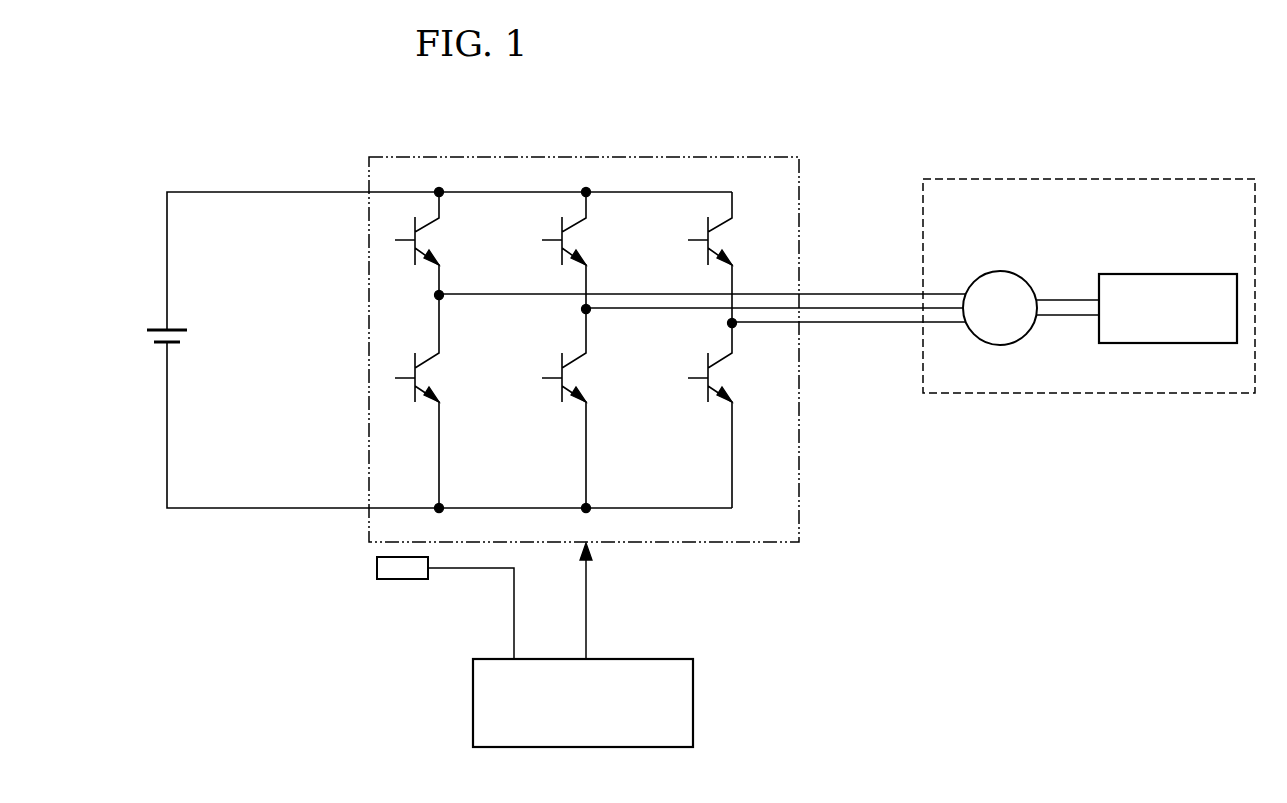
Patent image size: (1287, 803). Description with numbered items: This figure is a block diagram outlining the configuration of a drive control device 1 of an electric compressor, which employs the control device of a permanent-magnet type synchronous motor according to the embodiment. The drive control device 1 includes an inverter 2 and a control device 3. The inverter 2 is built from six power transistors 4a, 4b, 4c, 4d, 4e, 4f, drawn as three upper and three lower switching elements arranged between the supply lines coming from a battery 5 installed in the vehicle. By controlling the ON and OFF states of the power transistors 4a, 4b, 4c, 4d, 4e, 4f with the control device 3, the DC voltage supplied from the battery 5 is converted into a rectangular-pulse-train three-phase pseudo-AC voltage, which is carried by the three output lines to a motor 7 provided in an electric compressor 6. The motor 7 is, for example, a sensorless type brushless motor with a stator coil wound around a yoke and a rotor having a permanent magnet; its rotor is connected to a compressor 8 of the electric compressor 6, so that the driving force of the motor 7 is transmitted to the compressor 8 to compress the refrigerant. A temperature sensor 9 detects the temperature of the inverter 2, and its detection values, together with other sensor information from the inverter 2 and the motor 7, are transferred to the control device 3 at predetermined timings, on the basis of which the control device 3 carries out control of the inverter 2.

The drive control device 1 is at (826, 108).
The inverter 2 is at (680, 157).
The control device 3 is at (697, 700).
The power transistor 4a is at (430, 240).
The power transistor 4b is at (577, 240).
The power transistor 4c is at (723, 240).
The power transistor 4d is at (432, 378).
The power transistor 4e is at (578, 378).
The power transistor 4f is at (723, 378).
The battery 5 is at (183, 336).
The electric compressor 6 is at (1068, 179).
The motor 7 is at (1000, 271).
The compressor 8 is at (1183, 274).
The temperature sensor 9 is at (410, 580).